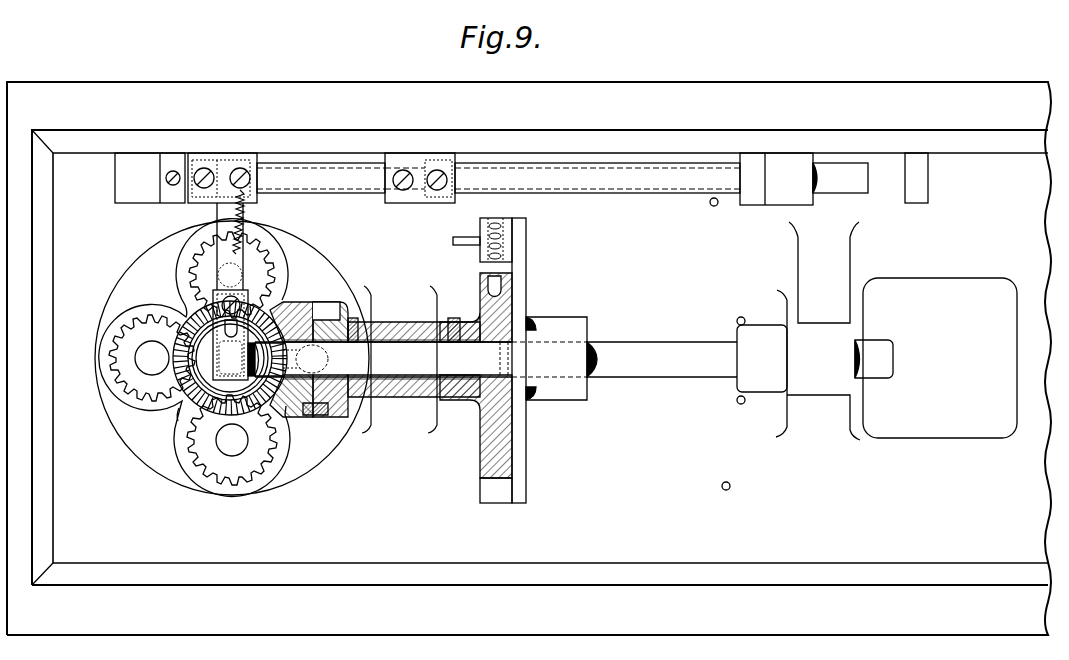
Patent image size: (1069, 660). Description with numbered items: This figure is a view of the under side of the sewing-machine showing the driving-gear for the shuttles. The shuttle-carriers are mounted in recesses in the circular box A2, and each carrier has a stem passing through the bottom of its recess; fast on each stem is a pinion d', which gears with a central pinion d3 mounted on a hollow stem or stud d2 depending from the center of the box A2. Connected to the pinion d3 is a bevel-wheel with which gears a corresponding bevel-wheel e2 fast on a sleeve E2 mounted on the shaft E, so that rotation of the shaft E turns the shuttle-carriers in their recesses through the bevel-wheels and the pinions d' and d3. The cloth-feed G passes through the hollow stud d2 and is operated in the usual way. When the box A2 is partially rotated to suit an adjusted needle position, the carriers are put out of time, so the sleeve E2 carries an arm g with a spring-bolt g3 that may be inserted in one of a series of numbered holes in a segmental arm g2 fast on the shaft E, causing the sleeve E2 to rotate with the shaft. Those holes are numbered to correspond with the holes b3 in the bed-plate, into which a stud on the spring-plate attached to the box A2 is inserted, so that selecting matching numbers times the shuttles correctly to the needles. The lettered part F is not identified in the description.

The circular box A2 is at (212, 358).
The pinion d' is at (223, 377).
The hollow stem or stud d2 is at (208, 358).
The pinion d3 is at (200, 403).
The bevel gear ring F is at (196, 322).
The cloth-feed G is at (230, 335).
The bevel-wheel e2 is at (287, 296).
The sleeve E2 is at (405, 322).
The shaft E is at (662, 359).
The arm g is at (484, 312).
The segmental arm g2 is at (527, 282).
The spring-bolt g3 is at (490, 280).
The holes b3 is at (722, 485).